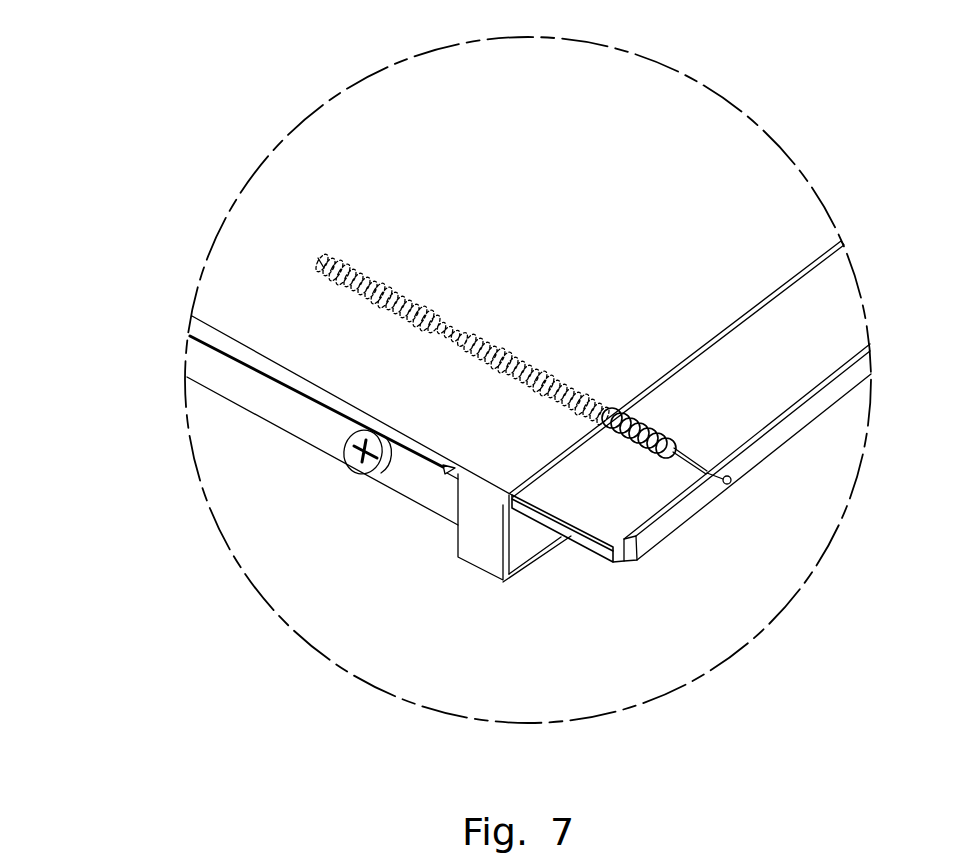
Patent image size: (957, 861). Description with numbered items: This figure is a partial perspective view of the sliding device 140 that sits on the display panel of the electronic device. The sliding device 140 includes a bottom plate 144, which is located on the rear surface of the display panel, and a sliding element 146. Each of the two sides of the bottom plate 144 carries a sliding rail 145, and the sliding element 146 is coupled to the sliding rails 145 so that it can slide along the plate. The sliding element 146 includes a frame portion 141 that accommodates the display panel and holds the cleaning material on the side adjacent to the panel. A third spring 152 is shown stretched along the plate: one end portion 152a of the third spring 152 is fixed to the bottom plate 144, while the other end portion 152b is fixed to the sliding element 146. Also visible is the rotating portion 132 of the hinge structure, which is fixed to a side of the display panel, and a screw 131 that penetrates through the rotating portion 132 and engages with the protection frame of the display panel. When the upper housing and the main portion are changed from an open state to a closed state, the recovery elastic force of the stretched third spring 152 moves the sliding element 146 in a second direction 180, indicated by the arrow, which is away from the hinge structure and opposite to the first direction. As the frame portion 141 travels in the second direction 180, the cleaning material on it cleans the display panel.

The screw 131 is at (357, 457).
The rotating portion 132 is at (226, 381).
The sliding device 140 is at (677, 552).
The frame portion 141 is at (480, 550).
The bottom plate 144 is at (842, 318).
The sliding rail 145 is at (573, 538).
The sliding element 146 is at (323, 367).
The third spring 152 is at (683, 477).
The end portion 152a is at (727, 481).
The end portion 152b is at (323, 266).
The second direction 180 is at (644, 493).